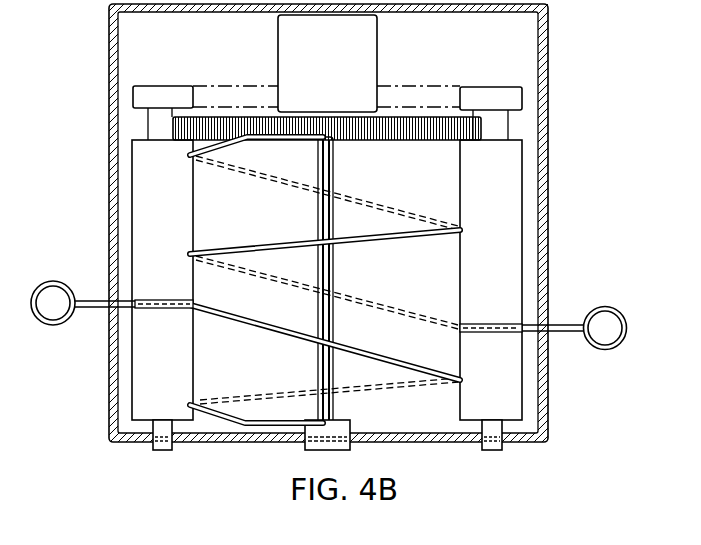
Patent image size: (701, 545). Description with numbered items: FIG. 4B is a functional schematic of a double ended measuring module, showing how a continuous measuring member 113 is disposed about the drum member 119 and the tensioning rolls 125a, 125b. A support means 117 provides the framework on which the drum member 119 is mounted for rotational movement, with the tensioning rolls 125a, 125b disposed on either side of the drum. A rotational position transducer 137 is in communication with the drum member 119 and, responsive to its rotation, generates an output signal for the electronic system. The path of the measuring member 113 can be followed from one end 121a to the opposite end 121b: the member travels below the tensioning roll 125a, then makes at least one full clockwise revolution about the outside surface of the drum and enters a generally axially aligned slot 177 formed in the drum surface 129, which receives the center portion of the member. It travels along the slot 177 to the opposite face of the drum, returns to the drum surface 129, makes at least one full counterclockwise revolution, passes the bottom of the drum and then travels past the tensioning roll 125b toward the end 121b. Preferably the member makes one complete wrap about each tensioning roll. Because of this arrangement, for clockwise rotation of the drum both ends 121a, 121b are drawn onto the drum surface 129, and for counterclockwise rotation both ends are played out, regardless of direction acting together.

The measuring member 113 is at (256, 328).
The support means 117 is at (545, 418).
The drum member 119 is at (425, 286).
The end of the measuring member 121a is at (600, 307).
The end of the measuring member 121b is at (62, 282).
The tensioning roll 125a is at (512, 393).
The tensioning roll 125b is at (140, 378).
The drum surface 129 is at (215, 205).
The rotational position transducer 137 is at (378, 58).
The slot 177 is at (334, 162).